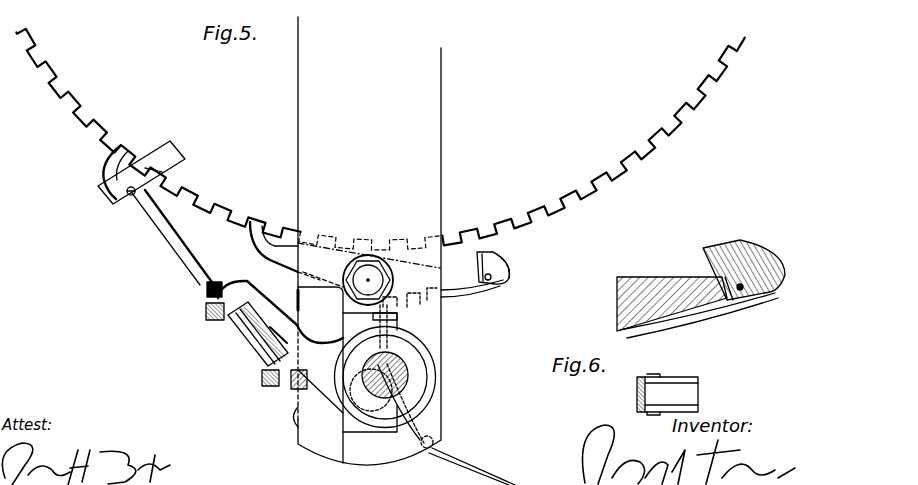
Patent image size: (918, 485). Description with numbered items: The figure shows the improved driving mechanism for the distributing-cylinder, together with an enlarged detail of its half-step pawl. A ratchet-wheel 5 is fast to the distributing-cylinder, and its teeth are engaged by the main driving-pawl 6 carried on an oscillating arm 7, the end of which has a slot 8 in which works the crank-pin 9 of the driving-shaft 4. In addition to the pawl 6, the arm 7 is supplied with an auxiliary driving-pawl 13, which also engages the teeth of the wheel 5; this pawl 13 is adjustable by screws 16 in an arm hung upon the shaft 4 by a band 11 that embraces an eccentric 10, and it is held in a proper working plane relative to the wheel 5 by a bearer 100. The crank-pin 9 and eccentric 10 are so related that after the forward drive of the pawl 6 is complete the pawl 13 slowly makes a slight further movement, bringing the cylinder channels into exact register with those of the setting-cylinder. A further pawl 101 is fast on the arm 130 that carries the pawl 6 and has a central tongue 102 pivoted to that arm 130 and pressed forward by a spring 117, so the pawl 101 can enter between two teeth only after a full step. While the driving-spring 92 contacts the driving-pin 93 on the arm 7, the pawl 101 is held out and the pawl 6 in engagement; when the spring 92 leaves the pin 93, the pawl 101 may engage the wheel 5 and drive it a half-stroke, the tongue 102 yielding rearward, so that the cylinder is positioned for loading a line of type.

In FIG. 5, the ratchet-wheel 5 is at (82, 124).
In FIG. 5, the oscillating arm 7 is at (368, 241).
In FIG. 5, the bearer 100 is at (176, 152).
In FIG. 5, the auxiliary driving-pawl 13 is at (170, 241).
In FIG. 5, the screws 16 is at (208, 292).
In FIG. 5, the main driving-pawl 6 is at (273, 253).
In FIG. 5, the slot 8 is at (343, 323).
In FIG. 5, the driving-spring 92 is at (398, 317).
In FIG. 5, the band 11 is at (436, 373).
In FIG. 5, the eccentric 10 is at (348, 357).
In FIG. 5, the driving-shaft 4 is at (374, 356).
In FIG. 5, the crank-pin 9 is at (395, 390).
In FIG. 5, the driving-pin 93 is at (434, 443).
In FIG. 5, the central tongue 102 is at (478, 262).
In FIG. 6, the central tongue 102 is at (748, 252).
In FIG. 5, the pawl 101 is at (509, 272).
In FIG. 6, the pawl 101 is at (684, 380).
In FIG. 5, the spring 117 is at (463, 295).
In FIG. 6, the spring 117 is at (707, 323).
In FIG. 6, the arm 130 is at (664, 279).